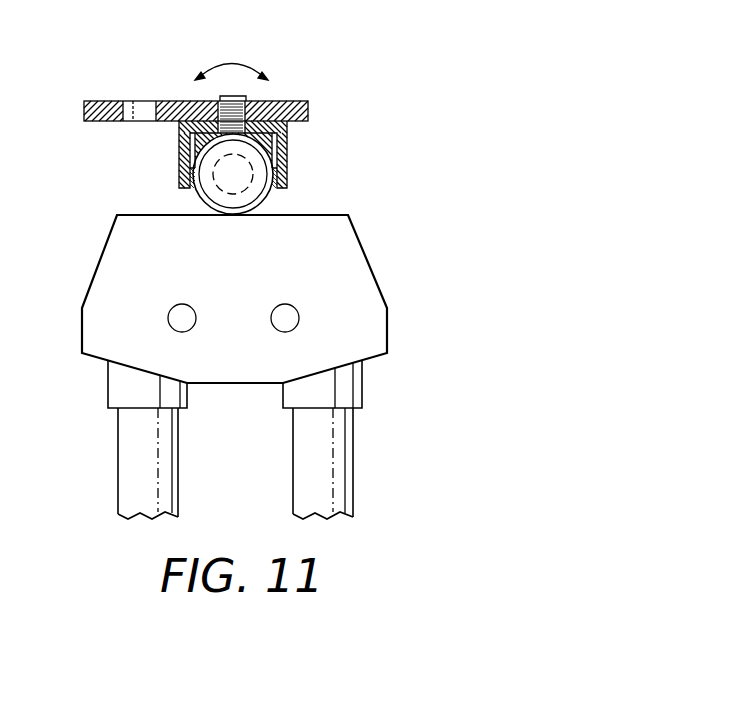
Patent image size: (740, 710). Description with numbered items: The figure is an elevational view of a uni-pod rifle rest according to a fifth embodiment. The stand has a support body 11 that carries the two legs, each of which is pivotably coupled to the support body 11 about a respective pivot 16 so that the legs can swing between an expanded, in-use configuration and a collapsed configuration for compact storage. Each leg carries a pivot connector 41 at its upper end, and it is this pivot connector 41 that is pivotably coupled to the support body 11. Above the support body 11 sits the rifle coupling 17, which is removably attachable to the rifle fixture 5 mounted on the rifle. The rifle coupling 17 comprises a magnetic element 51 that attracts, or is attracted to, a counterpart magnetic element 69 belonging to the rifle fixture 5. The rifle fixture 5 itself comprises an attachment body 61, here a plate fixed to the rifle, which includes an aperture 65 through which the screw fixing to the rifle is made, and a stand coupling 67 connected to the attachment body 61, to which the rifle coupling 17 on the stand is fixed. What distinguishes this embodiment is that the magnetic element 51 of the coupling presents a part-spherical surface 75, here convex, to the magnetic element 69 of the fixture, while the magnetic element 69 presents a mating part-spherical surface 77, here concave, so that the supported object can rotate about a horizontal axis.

The rifle fixture 5 is at (325, 103).
The support body 11 is at (378, 239).
The pivot 16 is at (168, 318).
The rifle coupling 17 is at (197, 205).
The pivot connector 41 is at (108, 388).
The magnetic element 51 is at (262, 163).
The attachment body 61 is at (177, 102).
The aperture 65 is at (133, 102).
The stand coupling 67 is at (288, 176).
The magnetic element 69 is at (180, 136).
The part-spherical surface 75 is at (270, 102).
The part-spherical surface 77 is at (180, 153).